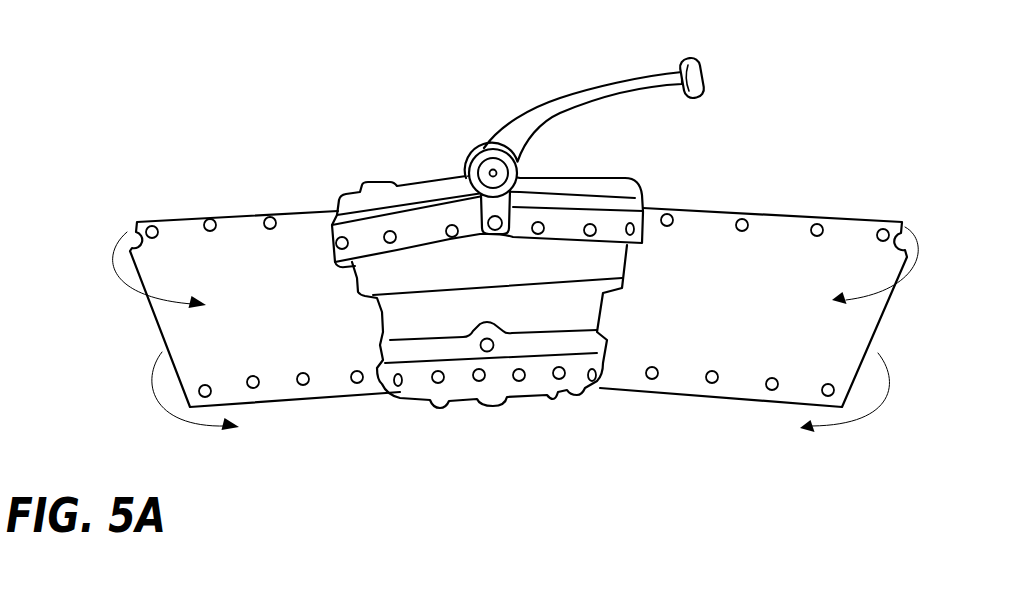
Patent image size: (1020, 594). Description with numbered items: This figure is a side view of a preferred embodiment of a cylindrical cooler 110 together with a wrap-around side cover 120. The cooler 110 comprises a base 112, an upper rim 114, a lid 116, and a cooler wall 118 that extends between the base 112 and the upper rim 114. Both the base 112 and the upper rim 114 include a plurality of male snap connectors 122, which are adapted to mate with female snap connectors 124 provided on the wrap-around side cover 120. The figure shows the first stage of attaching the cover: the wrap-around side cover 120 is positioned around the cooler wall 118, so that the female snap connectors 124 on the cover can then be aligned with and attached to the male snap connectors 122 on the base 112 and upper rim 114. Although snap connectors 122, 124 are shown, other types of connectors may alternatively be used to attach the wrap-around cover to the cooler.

The cylindrical cooler 110 is at (451, 146).
The base 112 is at (493, 399).
The upper rim 114 is at (353, 237).
The lid 116 is at (390, 197).
The cooler wall 118 is at (408, 308).
The wrap-around side cover 120 is at (167, 181).
The male snap connectors 122 is at (395, 243).
The female snap connectors 124 is at (744, 218).